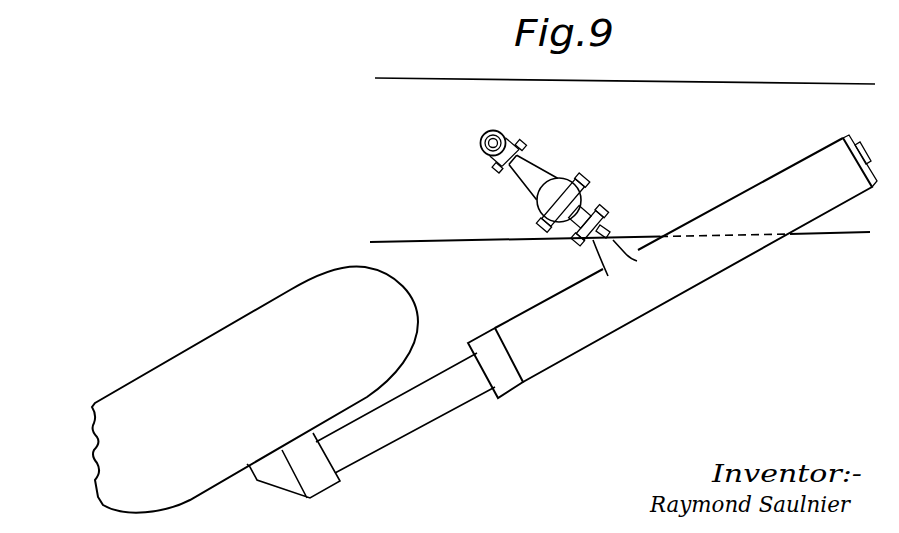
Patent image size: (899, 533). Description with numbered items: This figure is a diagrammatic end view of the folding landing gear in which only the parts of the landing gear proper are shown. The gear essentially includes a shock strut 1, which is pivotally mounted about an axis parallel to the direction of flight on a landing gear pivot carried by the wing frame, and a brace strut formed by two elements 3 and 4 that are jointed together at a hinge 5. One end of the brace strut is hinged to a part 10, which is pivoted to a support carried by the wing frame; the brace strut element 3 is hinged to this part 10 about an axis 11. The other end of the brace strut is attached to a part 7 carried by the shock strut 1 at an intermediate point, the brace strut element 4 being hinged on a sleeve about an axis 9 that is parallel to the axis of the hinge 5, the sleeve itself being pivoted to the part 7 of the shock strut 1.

The shock strut 1 is at (727, 263).
The brace strut element 3 is at (541, 173).
The brace strut element 4 is at (585, 219).
The joint 5 is at (567, 207).
The part carried by the shock strut 7 is at (618, 240).
The axis 9 is at (607, 240).
The part 10 is at (484, 152).
The axis 11 is at (520, 147).